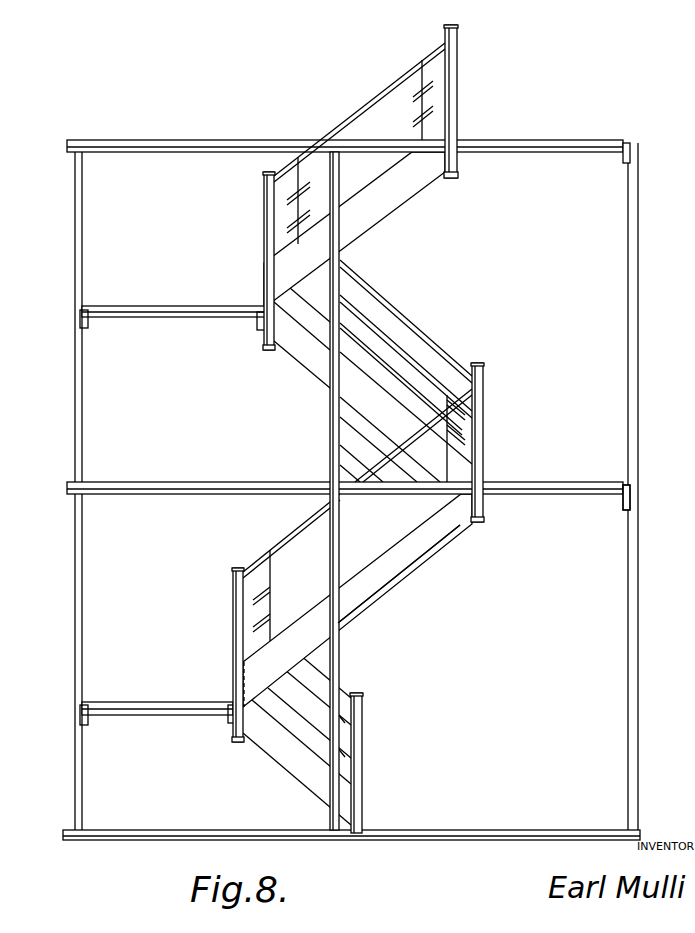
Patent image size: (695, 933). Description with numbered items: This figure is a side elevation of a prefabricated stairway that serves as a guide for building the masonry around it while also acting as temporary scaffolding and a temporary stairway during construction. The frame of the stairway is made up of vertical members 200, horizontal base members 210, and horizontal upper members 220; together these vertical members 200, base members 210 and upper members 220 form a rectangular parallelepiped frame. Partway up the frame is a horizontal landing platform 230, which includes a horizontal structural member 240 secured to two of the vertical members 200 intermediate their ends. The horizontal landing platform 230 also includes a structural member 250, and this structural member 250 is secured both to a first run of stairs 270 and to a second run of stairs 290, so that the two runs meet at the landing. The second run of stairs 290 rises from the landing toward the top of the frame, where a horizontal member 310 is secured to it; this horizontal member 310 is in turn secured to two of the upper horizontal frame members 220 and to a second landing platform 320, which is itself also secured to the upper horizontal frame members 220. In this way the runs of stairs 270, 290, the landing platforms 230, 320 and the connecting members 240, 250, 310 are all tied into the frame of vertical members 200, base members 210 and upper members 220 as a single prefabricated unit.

The vertical members 200 is at (77, 238).
The horizontal base members 210 is at (255, 483).
The horizontal upper members 220 is at (232, 496).
The horizontal landing platform 230 is at (168, 714).
The horizontal structural member 240 is at (87, 724).
The structural member 250 is at (223, 722).
The first run of stairs 270 is at (284, 757).
The second run of stairs 290 is at (352, 599).
The horizontal member 310 is at (484, 506).
The second landing platform 320 is at (622, 506).